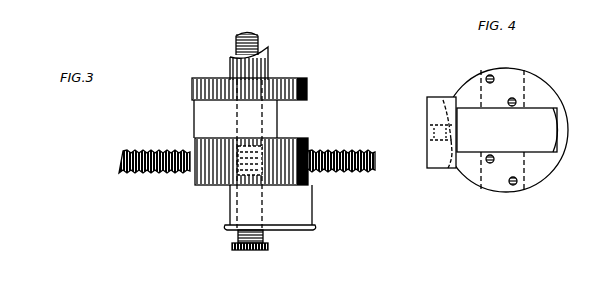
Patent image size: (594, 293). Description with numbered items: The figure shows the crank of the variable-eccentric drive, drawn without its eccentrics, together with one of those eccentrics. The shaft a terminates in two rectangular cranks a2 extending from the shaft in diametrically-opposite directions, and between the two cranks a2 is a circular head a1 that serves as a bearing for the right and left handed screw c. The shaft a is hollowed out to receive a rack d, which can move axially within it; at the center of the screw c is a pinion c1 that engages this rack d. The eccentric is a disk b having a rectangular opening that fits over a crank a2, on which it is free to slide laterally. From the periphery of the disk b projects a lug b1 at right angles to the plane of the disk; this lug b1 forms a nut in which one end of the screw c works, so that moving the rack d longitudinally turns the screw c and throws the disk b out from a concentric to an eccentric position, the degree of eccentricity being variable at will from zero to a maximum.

In FIG. 3, the shaft a is at (268, 62).
In FIG. 3, the rectangular cranks a2 is at (195, 118).
In FIG. 3, the circular head a1 is at (208, 187).
In FIG. 3, the pinion c1 is at (263, 160).
In FIG. 3, the right and left handed screw c is at (140, 171).
In FIG. 3, the rack d is at (268, 245).
In FIG. 4, the disk b is at (542, 72).
In FIG. 4, the lug b1 is at (430, 97).